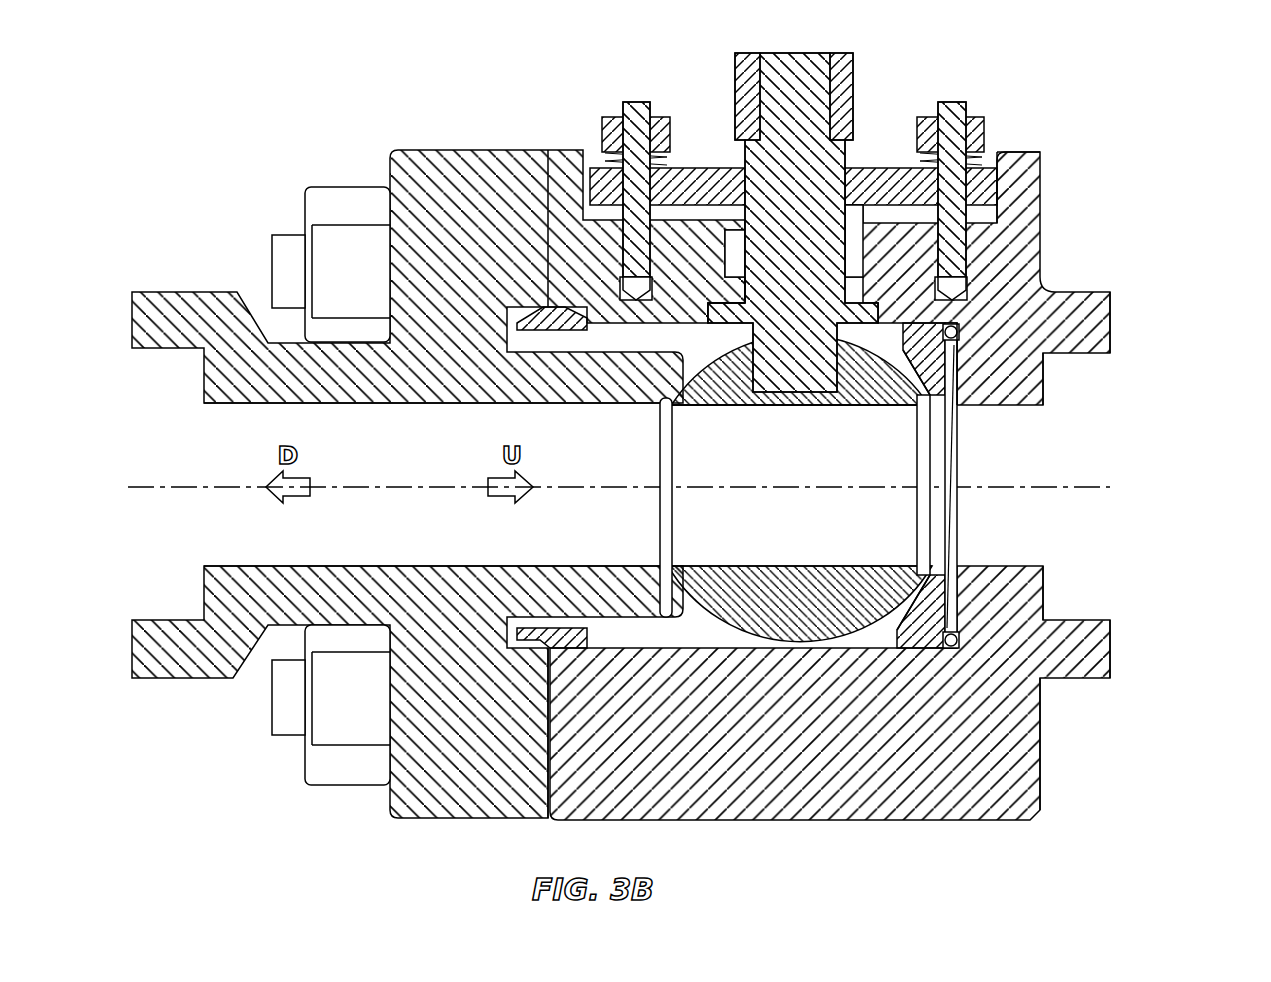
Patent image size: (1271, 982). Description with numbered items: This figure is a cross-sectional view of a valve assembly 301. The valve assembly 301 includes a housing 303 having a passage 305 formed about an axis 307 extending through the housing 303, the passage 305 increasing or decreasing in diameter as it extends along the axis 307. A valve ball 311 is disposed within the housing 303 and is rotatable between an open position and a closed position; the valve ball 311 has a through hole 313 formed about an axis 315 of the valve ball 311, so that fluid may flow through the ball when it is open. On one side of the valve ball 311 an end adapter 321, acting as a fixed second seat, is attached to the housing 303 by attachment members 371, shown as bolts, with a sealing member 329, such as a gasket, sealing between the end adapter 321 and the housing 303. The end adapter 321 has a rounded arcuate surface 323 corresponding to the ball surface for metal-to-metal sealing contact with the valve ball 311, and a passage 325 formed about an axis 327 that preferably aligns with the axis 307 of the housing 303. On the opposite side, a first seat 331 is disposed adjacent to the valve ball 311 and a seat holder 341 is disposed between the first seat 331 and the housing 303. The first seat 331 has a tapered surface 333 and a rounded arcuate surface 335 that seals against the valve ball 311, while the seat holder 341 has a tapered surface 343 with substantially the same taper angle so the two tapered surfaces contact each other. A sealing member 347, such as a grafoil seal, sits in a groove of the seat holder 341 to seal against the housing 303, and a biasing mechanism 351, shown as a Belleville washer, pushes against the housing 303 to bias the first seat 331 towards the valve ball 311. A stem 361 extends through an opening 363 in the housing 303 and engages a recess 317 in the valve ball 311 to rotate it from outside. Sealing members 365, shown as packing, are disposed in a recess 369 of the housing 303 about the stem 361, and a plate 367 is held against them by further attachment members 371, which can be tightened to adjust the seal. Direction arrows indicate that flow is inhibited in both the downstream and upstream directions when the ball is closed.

The valve assembly 301 is at (368, 86).
The housing 303 is at (680, 800).
The passage 305 is at (997, 565).
The axis 307 is at (1092, 487).
The valve ball 311 is at (762, 620).
The through hole 313 is at (712, 562).
The axis 315 is at (1072, 487).
The recess 317 is at (747, 378).
The end adapter 321 is at (468, 800).
The rounded arcuate surface 323 is at (662, 420).
The passage 325 is at (393, 566).
The axis 327 is at (400, 478).
The sealing member 329 is at (543, 652).
The first seat 331 is at (907, 573).
The tapered surface 333 is at (880, 625).
The rounded arcuate surface 335 is at (877, 578).
The seat holder 341 is at (947, 640).
The tapered surface 343 is at (936, 612).
The sealing member 347 is at (957, 330).
The biasing mechanism 351 is at (957, 385).
The stem 361 is at (830, 53).
The opening 363 is at (690, 300).
The sealing members 365 is at (857, 252).
The plate 367 is at (884, 168).
The recess 369 is at (1000, 212).
The attachment members 371 is at (306, 215).